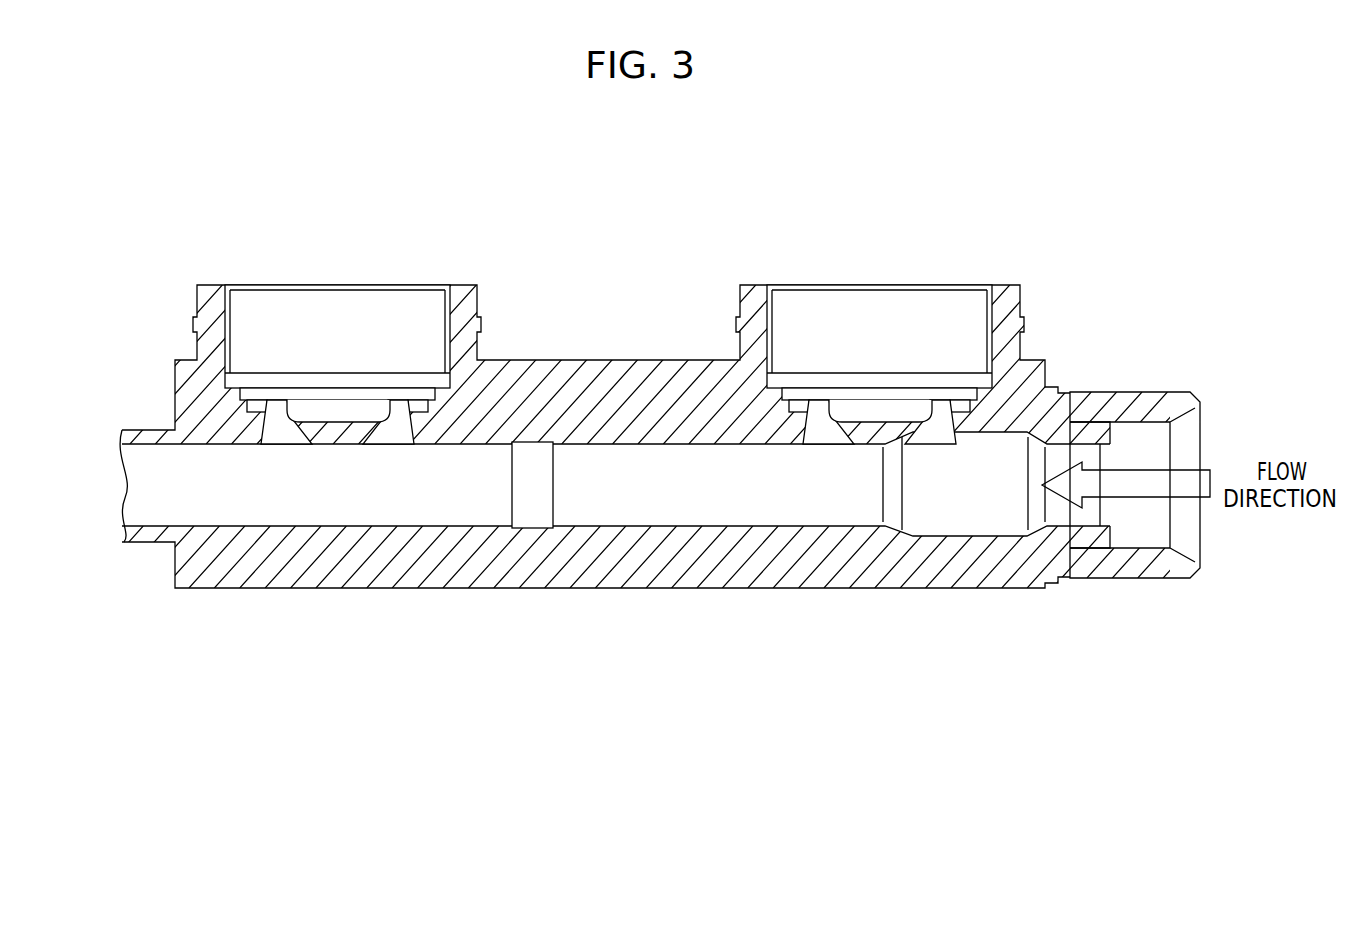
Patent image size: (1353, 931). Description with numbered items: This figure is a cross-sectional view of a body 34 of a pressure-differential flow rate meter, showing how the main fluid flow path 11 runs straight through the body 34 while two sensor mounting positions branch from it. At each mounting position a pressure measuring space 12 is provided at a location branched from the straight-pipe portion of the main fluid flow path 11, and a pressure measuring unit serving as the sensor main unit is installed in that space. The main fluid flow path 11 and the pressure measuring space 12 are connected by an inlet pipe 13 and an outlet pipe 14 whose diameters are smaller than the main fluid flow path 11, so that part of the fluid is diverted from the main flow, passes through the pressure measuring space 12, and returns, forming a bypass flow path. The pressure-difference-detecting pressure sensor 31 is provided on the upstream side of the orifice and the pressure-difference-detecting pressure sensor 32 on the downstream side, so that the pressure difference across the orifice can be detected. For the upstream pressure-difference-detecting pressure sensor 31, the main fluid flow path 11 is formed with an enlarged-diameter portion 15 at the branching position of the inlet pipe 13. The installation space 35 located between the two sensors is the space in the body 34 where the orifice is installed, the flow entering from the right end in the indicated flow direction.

The main fluid flow path 11 is at (863, 497).
The pressure measuring space 12 is at (360, 405).
The inlet pipe 13 is at (400, 452).
The outlet pipe 14 is at (280, 450).
The enlarged-diameter portion 15 is at (1000, 503).
The pressure-difference-detecting pressure sensor 31 is at (880, 310).
The pressure-difference-detecting pressure sensor 32 is at (337, 310).
The body 34 is at (599, 354).
The installation space 35 is at (527, 507).